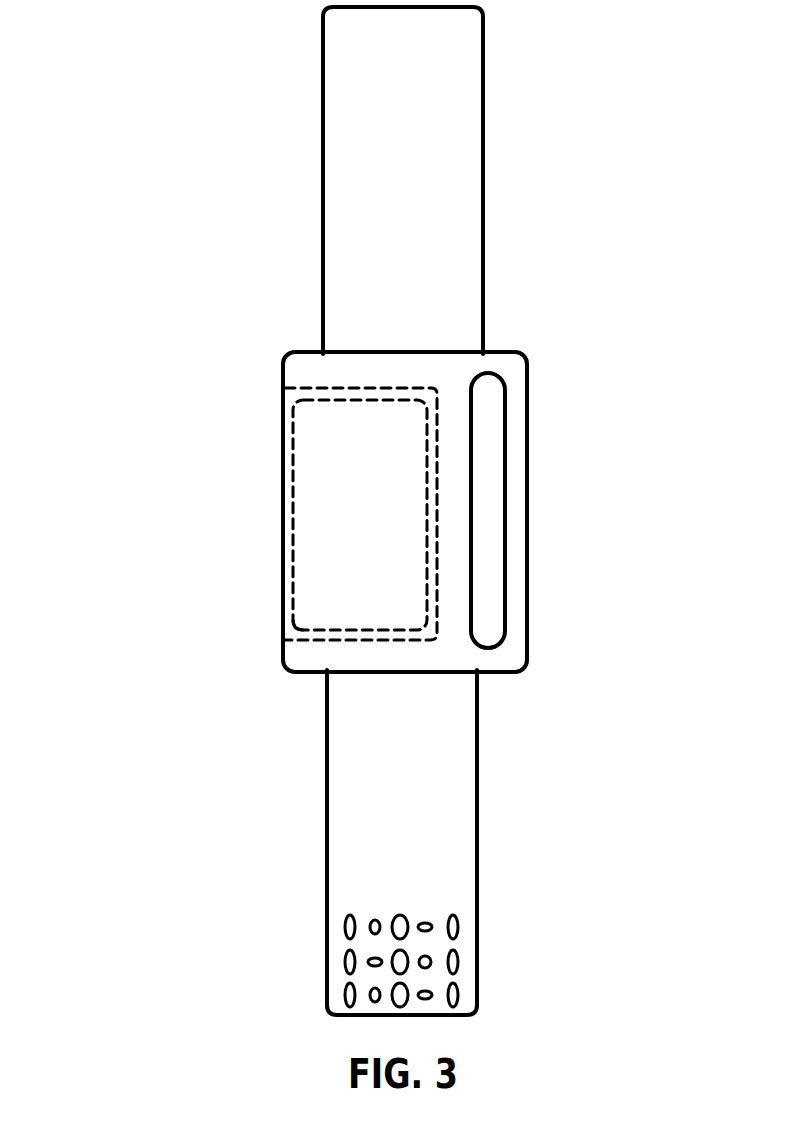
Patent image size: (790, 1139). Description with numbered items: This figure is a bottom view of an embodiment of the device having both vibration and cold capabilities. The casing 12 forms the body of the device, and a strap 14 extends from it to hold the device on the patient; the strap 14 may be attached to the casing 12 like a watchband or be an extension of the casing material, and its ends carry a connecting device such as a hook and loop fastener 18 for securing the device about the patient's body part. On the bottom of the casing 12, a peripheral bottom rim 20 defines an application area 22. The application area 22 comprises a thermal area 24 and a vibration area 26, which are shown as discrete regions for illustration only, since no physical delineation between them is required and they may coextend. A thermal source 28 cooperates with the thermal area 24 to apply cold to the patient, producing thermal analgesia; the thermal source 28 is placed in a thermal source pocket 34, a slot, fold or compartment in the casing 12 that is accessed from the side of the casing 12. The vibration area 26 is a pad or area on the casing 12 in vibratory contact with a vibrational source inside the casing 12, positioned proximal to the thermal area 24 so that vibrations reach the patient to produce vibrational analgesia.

The casing 12 is at (283, 371).
The strap 14 is at (423, 120).
The hook and loop fastener 18 is at (407, 958).
The peripheral bottom rim 20 is at (287, 663).
The application area 22 is at (383, 372).
The thermal area 24 is at (347, 540).
The vibration area 26 is at (490, 528).
The thermal source 28 is at (348, 458).
The thermal source pocket 34 is at (293, 633).